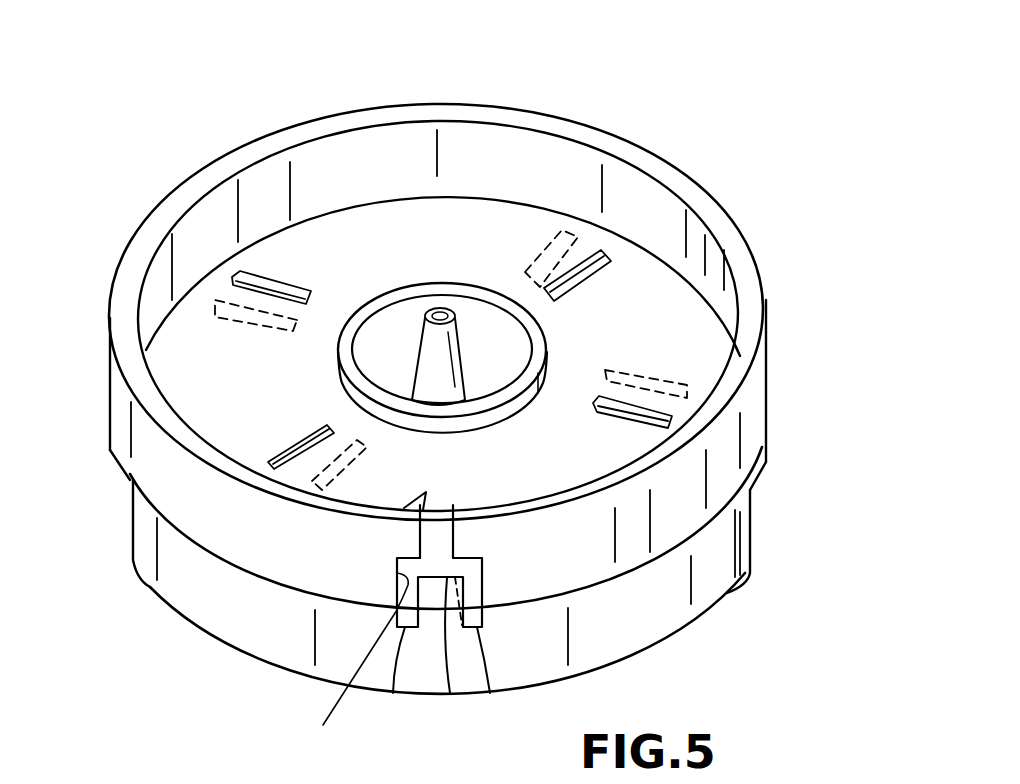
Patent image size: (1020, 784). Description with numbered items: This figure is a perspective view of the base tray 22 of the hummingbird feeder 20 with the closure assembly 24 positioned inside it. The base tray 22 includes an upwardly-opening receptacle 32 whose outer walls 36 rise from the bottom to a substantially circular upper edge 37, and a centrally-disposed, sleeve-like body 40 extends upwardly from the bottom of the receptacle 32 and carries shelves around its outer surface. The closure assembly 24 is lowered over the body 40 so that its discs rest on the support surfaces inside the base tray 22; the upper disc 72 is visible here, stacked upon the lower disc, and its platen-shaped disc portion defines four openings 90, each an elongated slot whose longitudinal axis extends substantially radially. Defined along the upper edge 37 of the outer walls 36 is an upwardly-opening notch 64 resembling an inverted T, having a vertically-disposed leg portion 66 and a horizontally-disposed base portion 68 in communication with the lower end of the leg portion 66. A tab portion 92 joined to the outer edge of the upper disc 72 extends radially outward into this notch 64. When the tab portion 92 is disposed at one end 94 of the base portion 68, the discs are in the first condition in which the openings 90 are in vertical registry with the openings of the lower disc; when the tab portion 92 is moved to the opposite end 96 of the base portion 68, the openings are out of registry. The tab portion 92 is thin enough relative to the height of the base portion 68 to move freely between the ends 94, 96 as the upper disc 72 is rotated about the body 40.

The hummingbird feeder 20 is at (725, 202).
The base tray 22 is at (168, 543).
The closure assembly 24 is at (771, 272).
The upwardly-opening receptacle 32 is at (722, 557).
The outer walls 36 is at (757, 438).
The upper edge 37 is at (462, 103).
The sleeve-like body 40 is at (483, 287).
The upwardly-opening notch 64 is at (453, 510).
The leg portion 66 is at (413, 507).
The base portion 68 is at (450, 693).
The upper disc 72 is at (216, 370).
The openings 90 is at (540, 262).
The tab portion 92 is at (393, 693).
The one end of the base portion 94 is at (468, 557).
The opposite end of the base portion 96 is at (347, 685).